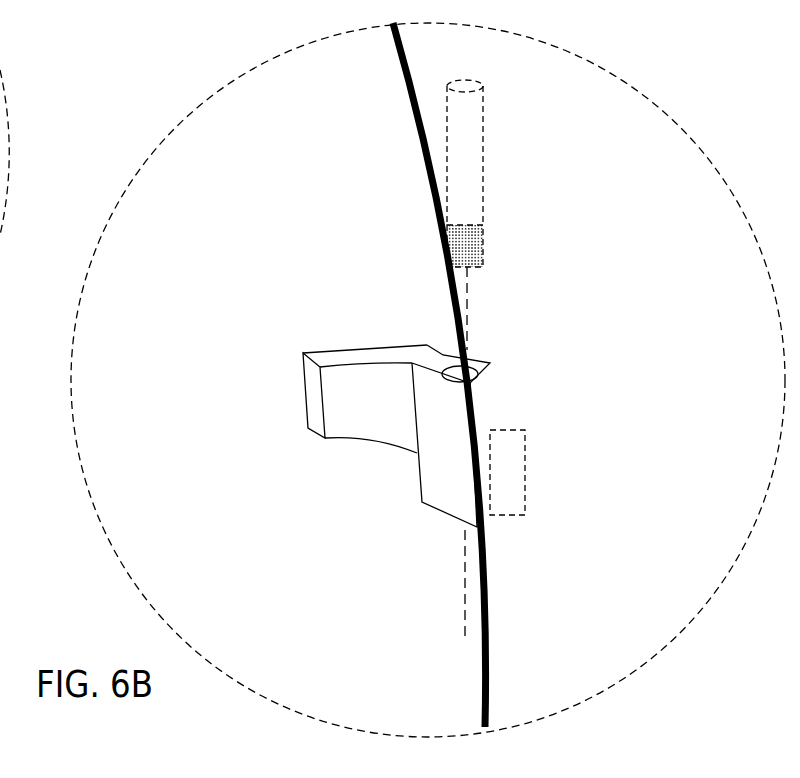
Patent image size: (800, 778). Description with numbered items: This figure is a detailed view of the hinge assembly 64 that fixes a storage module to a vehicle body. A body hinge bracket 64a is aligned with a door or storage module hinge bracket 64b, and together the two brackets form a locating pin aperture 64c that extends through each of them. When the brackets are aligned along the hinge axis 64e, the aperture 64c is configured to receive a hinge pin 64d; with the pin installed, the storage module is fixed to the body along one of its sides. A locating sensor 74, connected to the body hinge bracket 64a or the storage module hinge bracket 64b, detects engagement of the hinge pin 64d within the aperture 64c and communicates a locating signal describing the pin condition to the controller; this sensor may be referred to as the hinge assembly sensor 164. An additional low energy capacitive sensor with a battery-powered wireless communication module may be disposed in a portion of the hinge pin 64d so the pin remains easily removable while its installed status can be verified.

The hinge assembly 64 is at (233, 110).
The body hinge bracket 64a is at (337, 408).
The storage module hinge bracket 64b is at (444, 356).
The locating pin aperture 64c is at (477, 372).
The hinge pin 64d is at (462, 157).
The hinge axis 64e is at (467, 293).
The locating sensor 74 is at (475, 250).
The hinge assembly sensor 164 is at (507, 478).